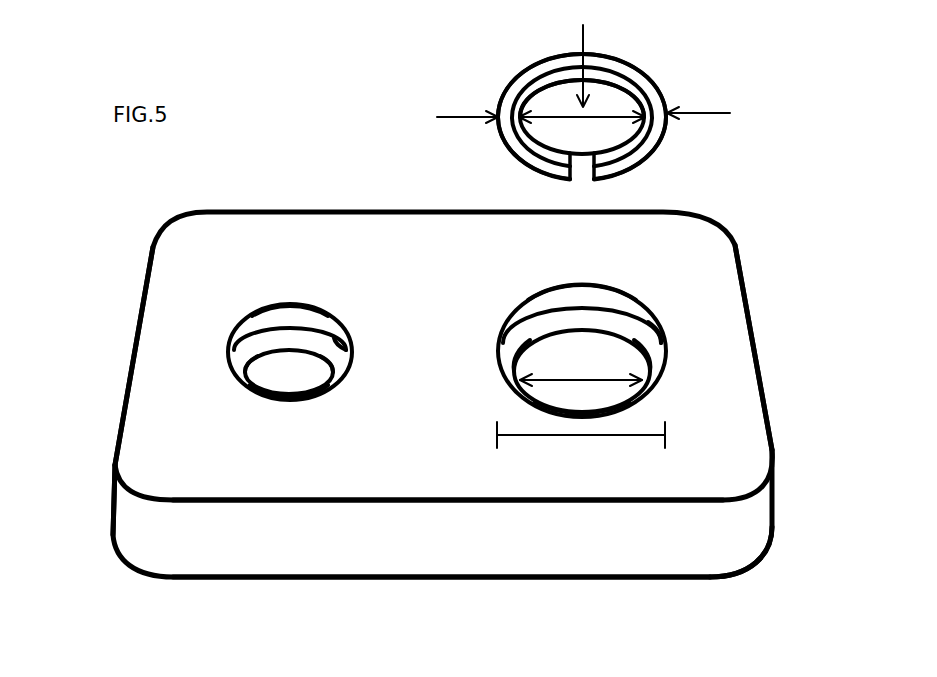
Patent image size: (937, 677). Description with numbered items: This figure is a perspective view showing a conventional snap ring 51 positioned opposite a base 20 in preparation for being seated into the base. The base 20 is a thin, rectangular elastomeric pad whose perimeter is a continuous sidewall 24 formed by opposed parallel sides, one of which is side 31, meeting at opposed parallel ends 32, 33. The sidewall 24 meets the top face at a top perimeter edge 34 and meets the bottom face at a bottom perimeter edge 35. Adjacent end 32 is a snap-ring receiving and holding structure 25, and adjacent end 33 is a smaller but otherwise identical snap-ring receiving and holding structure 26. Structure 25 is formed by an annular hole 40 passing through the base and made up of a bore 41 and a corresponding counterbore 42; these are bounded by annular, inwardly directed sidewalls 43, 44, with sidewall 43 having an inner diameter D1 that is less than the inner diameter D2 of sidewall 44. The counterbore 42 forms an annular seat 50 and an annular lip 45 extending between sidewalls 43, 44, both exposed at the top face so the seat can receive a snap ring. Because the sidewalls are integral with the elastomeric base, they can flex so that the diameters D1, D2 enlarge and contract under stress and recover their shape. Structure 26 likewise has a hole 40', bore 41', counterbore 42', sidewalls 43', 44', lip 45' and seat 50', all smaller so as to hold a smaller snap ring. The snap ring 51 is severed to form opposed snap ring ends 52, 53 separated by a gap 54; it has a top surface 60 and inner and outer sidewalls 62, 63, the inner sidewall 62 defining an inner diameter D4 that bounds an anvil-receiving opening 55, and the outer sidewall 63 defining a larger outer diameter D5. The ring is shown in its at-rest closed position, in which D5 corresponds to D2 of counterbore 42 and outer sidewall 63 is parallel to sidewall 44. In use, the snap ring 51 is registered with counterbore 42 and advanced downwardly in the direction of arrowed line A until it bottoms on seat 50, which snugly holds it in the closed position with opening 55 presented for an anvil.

The base 20 is at (157, 287).
The sidewall 24 is at (130, 522).
The snap-ring receiving and holding structure 25 is at (512, 310).
The snap-ring receiving and holding structure 26 is at (243, 324).
The side 31 is at (242, 553).
The end 32 is at (777, 430).
The end 33 is at (118, 403).
The top perimeter edge 34 is at (630, 503).
The bottom perimeter edge 35 is at (707, 577).
The hole 40 is at (582, 442).
The bore 41 is at (547, 356).
The counterbore 42 is at (587, 275).
The sidewall 43 is at (682, 346).
The sidewall 44 is at (582, 296).
The lip 45 is at (477, 353).
The seat 50 is at (671, 312).
The hole 40' is at (296, 416).
The bore 41' is at (270, 391).
The counterbore 42' is at (300, 283).
The sidewall 43' is at (360, 345).
The sidewall 44' is at (290, 299).
The lip 45' is at (210, 362).
The seat 50' is at (359, 317).
The snap ring 51 is at (507, 133).
The snap ring end 52 is at (573, 178).
The snap ring end 53 is at (592, 178).
The gap 54 is at (583, 164).
The anvil-receiving opening 55 is at (606, 104).
The top surface 60 is at (658, 124).
The inner sidewall 62 is at (542, 82).
The outer sidewall 63 is at (645, 174).
The arrowed line A is at (587, 40).
The inner diameter D1 is at (548, 417).
The inner diameter D2 is at (517, 437).
The inner diameter D4 is at (545, 119).
The outer diameter D5 is at (450, 116).